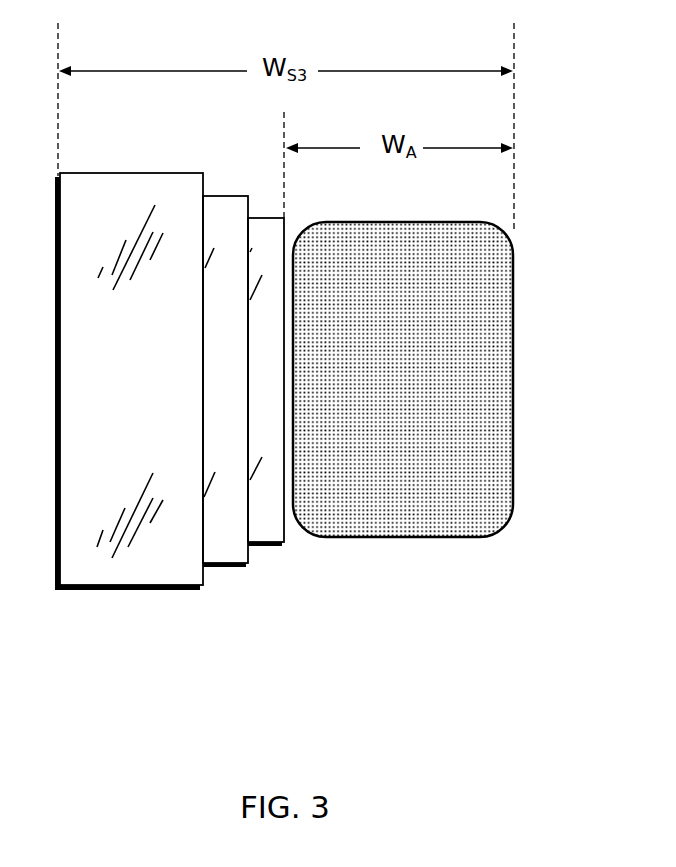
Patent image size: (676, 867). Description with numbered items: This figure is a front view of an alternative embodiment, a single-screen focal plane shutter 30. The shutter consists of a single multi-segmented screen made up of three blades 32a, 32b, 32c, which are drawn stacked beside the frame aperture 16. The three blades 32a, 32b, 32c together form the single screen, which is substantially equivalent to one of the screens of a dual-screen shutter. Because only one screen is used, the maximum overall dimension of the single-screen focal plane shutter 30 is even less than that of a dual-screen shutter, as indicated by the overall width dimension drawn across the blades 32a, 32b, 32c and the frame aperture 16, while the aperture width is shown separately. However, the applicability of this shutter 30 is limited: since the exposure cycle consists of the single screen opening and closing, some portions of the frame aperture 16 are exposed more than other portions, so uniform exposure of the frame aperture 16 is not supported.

The frame aperture 16 is at (403, 538).
The single-screen focal plane shutter 30 is at (603, 266).
The blade 32a is at (131, 380).
The blade 32b is at (243, 565).
The blade 32c is at (278, 543).